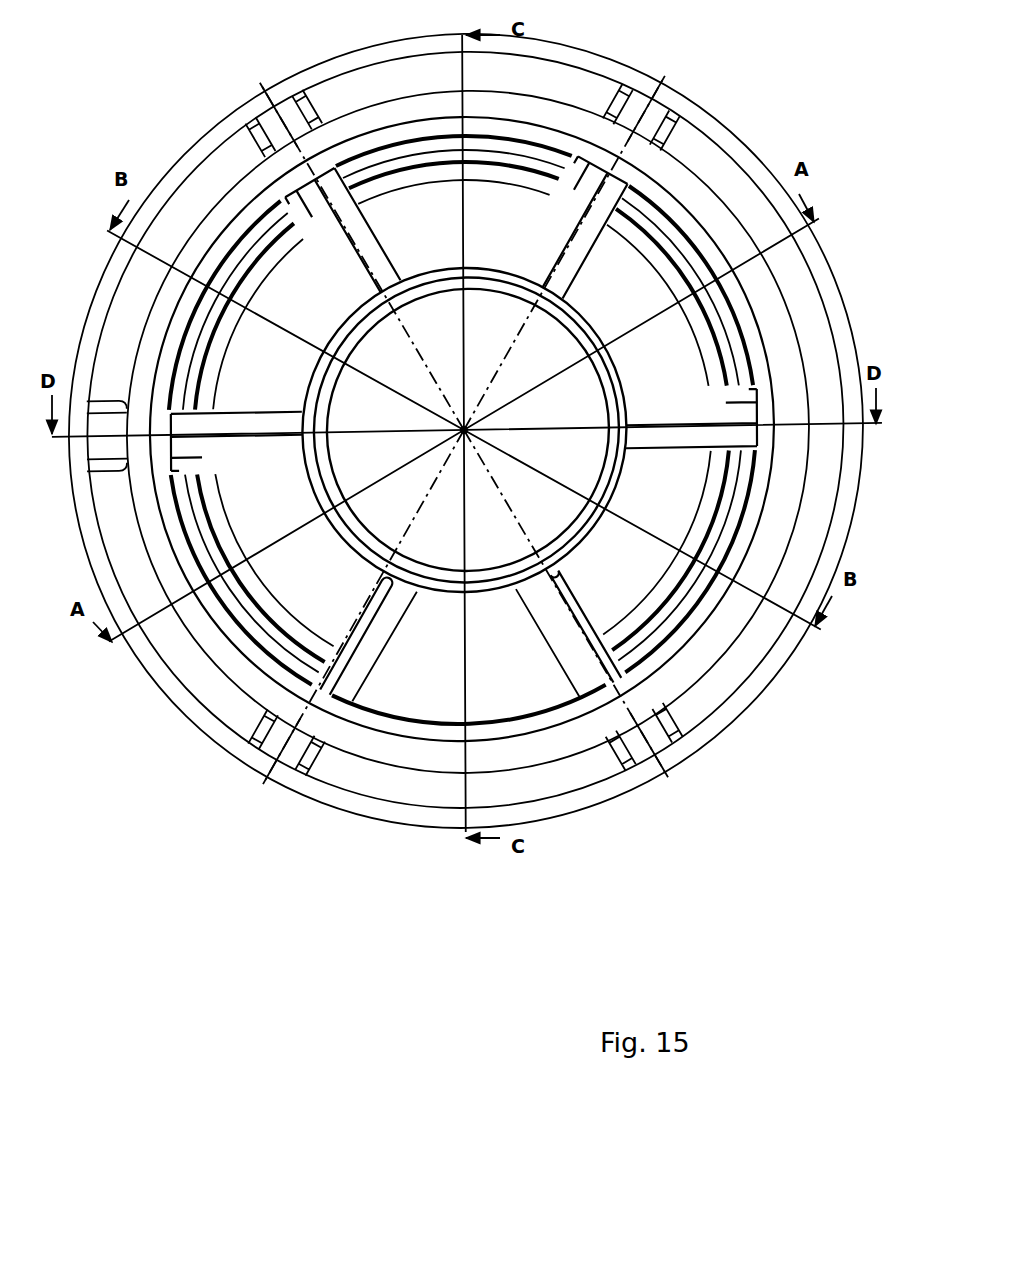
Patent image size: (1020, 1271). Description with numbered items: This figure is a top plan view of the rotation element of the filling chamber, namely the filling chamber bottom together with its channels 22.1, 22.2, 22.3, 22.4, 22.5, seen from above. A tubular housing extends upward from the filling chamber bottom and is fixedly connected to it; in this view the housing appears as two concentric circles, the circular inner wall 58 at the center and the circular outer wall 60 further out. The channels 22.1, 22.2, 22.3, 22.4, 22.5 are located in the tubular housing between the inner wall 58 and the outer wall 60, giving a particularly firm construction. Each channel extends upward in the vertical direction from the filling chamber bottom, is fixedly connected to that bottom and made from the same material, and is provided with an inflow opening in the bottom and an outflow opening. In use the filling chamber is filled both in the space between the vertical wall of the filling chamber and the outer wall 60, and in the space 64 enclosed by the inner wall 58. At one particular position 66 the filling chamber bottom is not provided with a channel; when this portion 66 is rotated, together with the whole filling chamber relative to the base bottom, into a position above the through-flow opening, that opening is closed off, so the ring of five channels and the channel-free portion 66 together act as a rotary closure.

The channel 22.1 is at (673, 561).
The channel 22.2 is at (680, 289).
The channel 22.3 is at (454, 184).
The channel 22.4 is at (255, 304).
The channel 22.5 is at (252, 579).
The inner wall 58 is at (612, 395).
The outer wall 60 is at (762, 340).
The space 64 is at (467, 430).
The position 66 is at (413, 683).